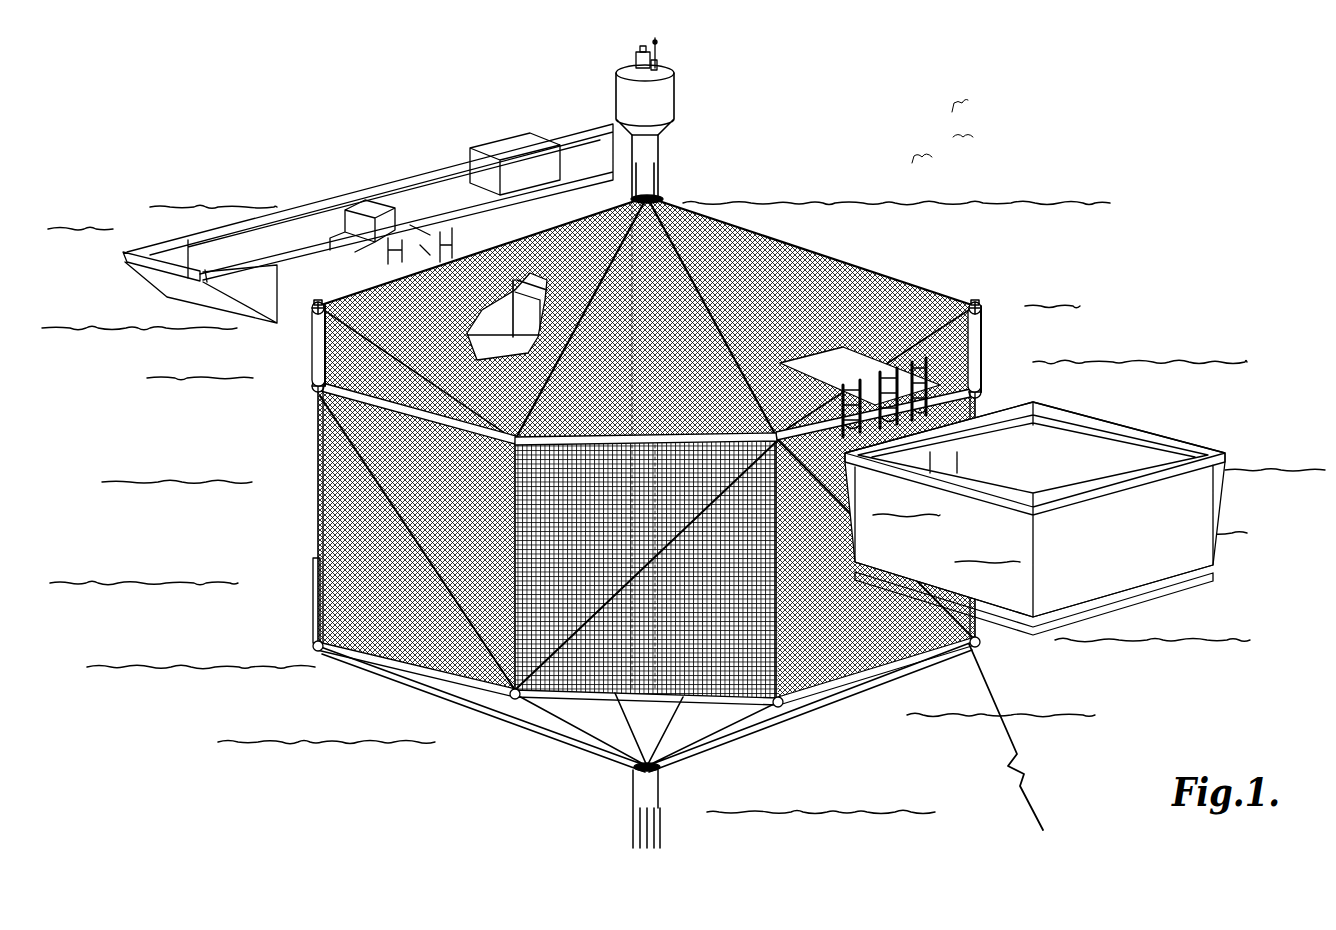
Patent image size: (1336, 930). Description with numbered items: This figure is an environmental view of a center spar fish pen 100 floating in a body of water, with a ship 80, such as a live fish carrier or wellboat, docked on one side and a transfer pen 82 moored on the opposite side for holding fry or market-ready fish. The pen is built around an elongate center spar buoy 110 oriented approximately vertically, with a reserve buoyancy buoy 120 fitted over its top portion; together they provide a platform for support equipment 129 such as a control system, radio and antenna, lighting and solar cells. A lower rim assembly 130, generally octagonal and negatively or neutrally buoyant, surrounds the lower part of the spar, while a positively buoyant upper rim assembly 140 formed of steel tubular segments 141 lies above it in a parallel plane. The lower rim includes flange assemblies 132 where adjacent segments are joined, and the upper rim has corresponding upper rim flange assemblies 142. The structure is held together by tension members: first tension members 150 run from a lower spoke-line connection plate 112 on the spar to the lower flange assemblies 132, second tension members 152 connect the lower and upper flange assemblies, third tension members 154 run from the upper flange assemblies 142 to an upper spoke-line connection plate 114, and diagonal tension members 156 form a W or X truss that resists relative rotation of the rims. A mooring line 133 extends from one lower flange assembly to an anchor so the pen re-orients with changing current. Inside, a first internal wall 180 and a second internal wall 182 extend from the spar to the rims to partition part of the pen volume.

The ship 80 is at (557, 151).
The transfer pen 82 is at (1170, 432).
The fish pen 100 is at (638, 465).
The center spar buoy 110 is at (664, 156).
The lower spoke-line connection plate 112 is at (640, 773).
The upper spoke-line connection plate 114 is at (653, 192).
The reserve buoyancy buoy 120 is at (666, 65).
The support equipment 129 is at (628, 55).
The lower rim assembly 130 is at (397, 671).
The flange assemblies 132 is at (313, 643).
The mooring line 133 is at (1030, 791).
The upper rim assembly 140 is at (840, 262).
The upper rim tubular segments 141 is at (312, 350).
The upper rim flange assemblies 142 is at (312, 389).
The first tension members 150 is at (425, 689).
The second tension members 152 is at (316, 421).
The third tension members 154 is at (700, 215).
The diagonal tension members 156 is at (373, 490).
The first internal wall 180 is at (507, 318).
The second internal wall 182 is at (534, 307).